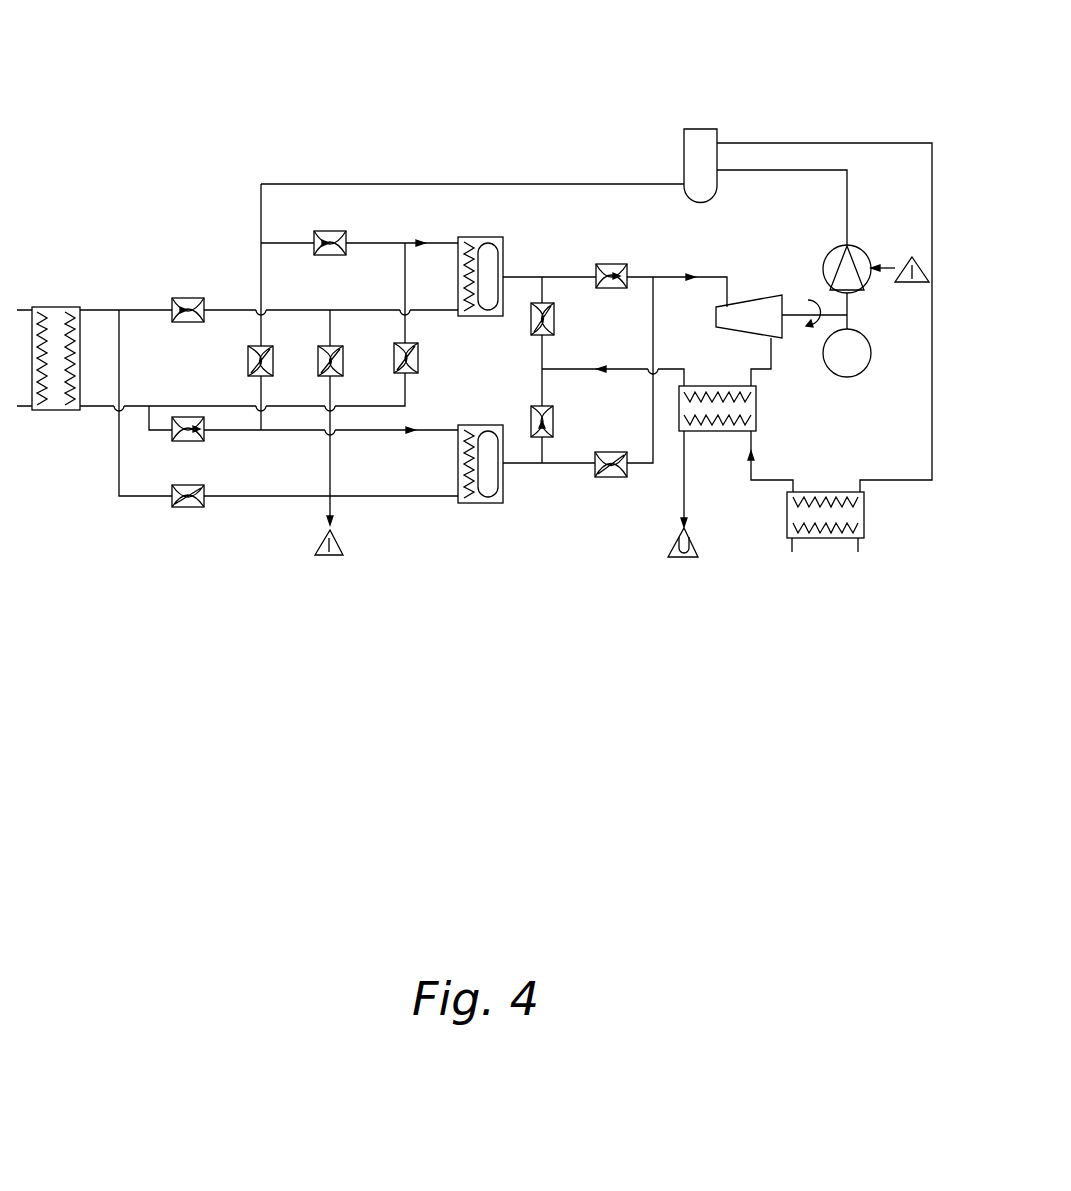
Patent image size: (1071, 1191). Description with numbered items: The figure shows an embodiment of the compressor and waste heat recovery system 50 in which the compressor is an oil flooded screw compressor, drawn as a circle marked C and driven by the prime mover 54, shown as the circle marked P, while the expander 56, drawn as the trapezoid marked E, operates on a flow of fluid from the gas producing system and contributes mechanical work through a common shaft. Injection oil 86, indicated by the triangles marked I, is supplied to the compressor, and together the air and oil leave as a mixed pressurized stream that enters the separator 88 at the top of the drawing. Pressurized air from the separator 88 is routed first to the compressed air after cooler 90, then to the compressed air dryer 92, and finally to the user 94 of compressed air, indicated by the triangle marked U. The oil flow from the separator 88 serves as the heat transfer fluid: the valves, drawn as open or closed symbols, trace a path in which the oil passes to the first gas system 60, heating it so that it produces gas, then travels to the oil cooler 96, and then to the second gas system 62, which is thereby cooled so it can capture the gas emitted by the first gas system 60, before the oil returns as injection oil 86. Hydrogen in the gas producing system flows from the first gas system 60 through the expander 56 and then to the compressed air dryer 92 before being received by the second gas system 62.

The compressor and waste heat recovery system 50 is at (855, 245).
The prime mover 54 is at (866, 370).
The expander 56 is at (748, 300).
The first gas system 60 is at (478, 237).
The second gas system 62 is at (487, 503).
The injection oil 86 is at (343, 545).
The separator 88 is at (684, 155).
The compressed air after cooler 90 is at (864, 515).
The compressed air dryer 92 is at (756, 410).
The user 94 is at (698, 548).
The oil cooler 96 is at (68, 307).